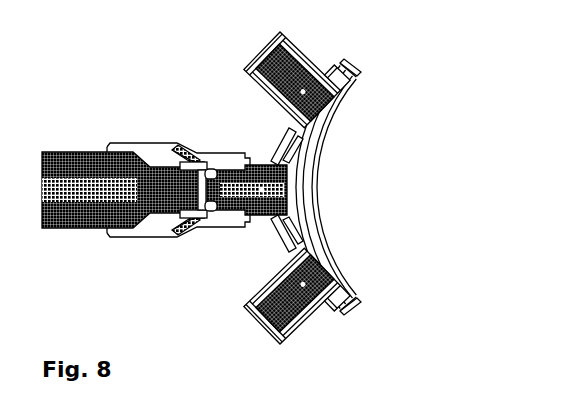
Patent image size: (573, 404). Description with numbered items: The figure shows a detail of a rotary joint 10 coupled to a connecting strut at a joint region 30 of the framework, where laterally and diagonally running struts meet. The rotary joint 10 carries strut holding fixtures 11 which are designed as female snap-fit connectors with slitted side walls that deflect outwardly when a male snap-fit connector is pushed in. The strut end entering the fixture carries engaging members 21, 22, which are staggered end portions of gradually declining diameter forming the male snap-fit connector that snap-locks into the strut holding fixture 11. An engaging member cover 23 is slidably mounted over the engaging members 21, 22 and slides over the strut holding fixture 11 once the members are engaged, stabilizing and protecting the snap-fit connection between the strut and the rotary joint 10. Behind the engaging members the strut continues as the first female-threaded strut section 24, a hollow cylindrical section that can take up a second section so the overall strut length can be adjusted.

The rotary joint 10 is at (336, 322).
The strut holding fixture 11 is at (248, 160).
The engaging member 21 is at (218, 210).
The engaging member 22 is at (160, 208).
The engaging member cover 23 is at (132, 237).
The first female-threaded strut section 24 is at (71, 227).
The joint region 30 is at (164, 167).